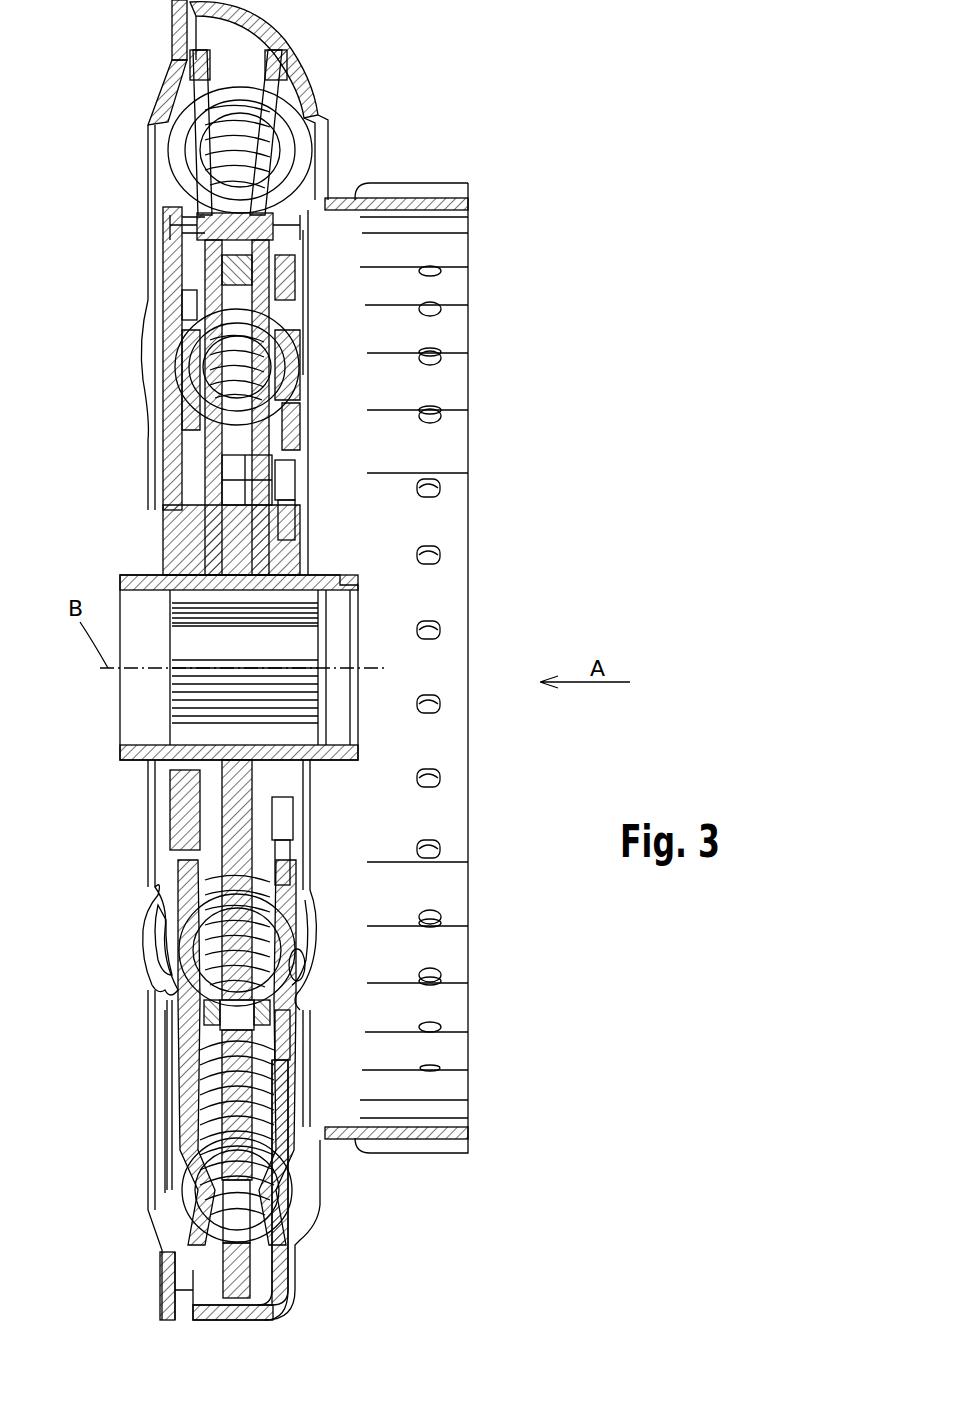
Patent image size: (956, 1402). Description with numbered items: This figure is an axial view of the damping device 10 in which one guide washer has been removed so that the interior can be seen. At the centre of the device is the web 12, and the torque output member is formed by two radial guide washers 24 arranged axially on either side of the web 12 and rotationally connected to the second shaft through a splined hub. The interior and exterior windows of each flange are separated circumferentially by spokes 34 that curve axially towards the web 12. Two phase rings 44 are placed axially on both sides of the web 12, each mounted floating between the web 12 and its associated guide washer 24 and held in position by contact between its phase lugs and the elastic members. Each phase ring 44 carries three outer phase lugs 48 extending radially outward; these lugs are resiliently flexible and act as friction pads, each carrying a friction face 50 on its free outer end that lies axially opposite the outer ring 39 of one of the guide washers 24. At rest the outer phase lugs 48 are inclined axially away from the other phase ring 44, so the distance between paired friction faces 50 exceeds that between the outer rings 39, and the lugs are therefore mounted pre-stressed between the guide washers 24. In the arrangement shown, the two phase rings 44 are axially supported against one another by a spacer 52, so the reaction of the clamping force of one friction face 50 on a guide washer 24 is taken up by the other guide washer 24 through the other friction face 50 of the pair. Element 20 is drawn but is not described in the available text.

The damping device 10 is at (455, 50).
The web 12 is at (200, 273).
The spring 20 is at (240, 1268).
The guide washer 24 is at (200, 905).
The spoke 34 is at (170, 968).
The outer ring 39 is at (170, 62).
The phase ring 44 is at (200, 350).
The outer phase lug 48 is at (210, 148).
The friction face 50 is at (298, 78).
The spacer 52 is at (250, 178).